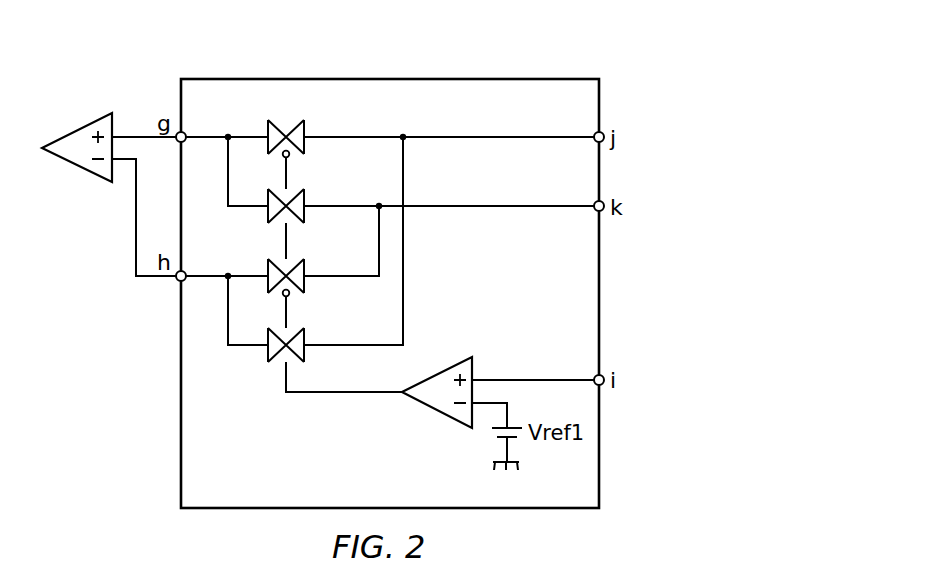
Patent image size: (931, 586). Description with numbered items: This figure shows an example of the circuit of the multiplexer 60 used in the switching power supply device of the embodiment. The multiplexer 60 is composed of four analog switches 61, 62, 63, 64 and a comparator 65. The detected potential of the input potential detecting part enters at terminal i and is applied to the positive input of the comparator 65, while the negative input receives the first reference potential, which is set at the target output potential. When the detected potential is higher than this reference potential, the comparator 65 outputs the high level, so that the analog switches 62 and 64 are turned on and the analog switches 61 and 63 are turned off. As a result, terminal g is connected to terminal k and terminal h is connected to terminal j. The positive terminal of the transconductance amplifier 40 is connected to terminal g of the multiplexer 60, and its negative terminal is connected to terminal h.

The transconductance amplifier 40 is at (80, 130).
The multiplexer 60 is at (458, 79).
The analog switch 61 is at (304, 128).
The analog switch 62 is at (304, 197).
The analog switch 63 is at (304, 267).
The analog switch 64 is at (304, 336).
The comparator 65 is at (435, 409).